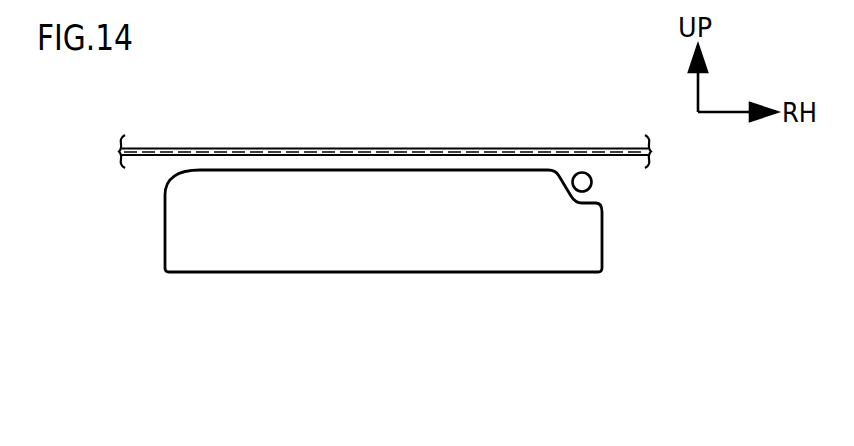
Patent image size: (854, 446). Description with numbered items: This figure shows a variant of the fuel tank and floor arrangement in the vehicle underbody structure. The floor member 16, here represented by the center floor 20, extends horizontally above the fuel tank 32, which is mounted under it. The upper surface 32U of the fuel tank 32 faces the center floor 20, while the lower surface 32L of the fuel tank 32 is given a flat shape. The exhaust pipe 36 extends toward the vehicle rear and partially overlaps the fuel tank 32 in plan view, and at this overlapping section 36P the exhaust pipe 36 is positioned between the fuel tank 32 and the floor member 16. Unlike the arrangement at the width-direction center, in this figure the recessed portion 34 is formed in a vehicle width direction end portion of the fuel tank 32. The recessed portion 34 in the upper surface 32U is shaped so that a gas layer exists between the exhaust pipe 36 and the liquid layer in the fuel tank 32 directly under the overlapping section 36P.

The floor member 16 is at (385, 128).
The center floor 20 is at (422, 148).
The fuel tank 32 is at (424, 223).
The upper surface of the fuel tank 32U is at (219, 169).
The lower surface of the fuel tank 32L is at (303, 274).
The recessed portion 34 is at (588, 196).
The overlapping section 36P is at (601, 140).
The exhaust pipe 36 is at (579, 172).